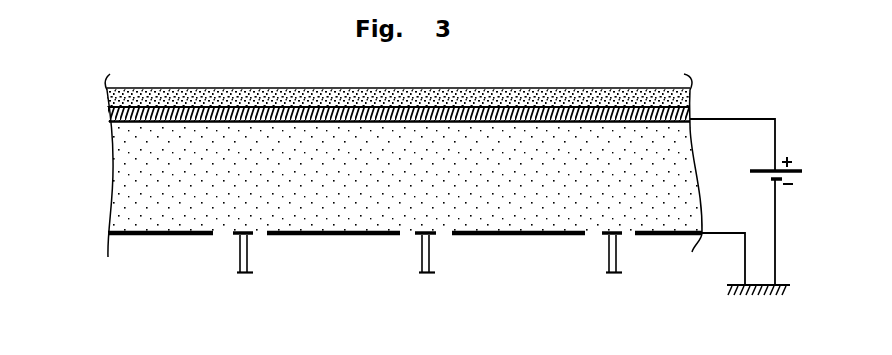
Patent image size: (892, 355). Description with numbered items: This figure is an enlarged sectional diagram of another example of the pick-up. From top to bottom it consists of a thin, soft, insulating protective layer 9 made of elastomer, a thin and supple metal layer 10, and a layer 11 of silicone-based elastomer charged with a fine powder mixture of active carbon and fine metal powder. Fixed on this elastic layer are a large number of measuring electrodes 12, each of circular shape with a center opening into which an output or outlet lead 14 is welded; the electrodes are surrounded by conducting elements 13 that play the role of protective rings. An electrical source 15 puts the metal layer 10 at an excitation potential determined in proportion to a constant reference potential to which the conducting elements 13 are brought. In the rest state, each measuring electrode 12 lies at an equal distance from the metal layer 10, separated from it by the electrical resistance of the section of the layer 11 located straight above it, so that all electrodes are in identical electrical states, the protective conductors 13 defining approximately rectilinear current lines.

The protective layer 9 is at (106, 99).
The metal layer 10 is at (108, 119).
The elastomer layer 11 is at (111, 162).
The measuring electrode 12 is at (416, 237).
The conducting elements 13 is at (530, 236).
The output lead 14 is at (431, 262).
The electrical source 15 is at (745, 248).